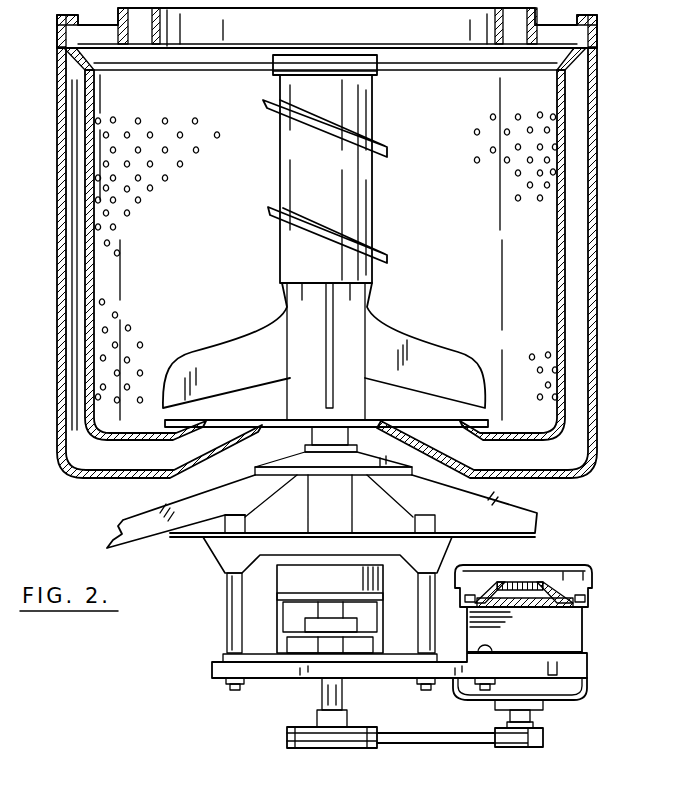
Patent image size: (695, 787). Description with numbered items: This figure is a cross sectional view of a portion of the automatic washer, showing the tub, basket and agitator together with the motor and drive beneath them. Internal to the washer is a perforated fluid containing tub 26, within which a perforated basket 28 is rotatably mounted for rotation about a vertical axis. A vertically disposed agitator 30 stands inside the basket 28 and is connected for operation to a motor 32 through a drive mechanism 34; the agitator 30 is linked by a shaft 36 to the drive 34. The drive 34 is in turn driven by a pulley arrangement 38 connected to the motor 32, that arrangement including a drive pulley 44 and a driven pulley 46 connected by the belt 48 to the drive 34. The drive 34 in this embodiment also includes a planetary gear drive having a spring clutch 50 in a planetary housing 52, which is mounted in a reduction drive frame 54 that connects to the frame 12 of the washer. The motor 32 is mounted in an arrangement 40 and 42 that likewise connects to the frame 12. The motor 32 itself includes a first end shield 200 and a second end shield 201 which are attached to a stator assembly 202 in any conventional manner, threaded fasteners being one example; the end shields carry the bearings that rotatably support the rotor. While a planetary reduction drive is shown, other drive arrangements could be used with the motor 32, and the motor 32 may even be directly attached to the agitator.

The frame 12 is at (123, 520).
The perforated fluid containing tub 26 is at (593, 202).
The perforated basket 28 is at (565, 262).
The agitator 30 is at (393, 319).
The motor 32 is at (560, 611).
The drive mechanism 34 is at (274, 618).
The shaft 36 is at (340, 509).
The pulley arrangement 38 is at (282, 738).
The mounting arrangement 40 is at (533, 670).
The mounting arrangement 42 is at (224, 612).
The drive pulley 44 is at (540, 727).
The driven pulley 46 is at (288, 728).
The belt 48 is at (388, 735).
The spring clutch 50 is at (357, 620).
The planetary housing 52 is at (280, 577).
The reduction drive frame 54 is at (227, 547).
The first end shield 200 is at (585, 690).
The second end shield 201 is at (578, 564).
The stator assembly 202 is at (577, 620).